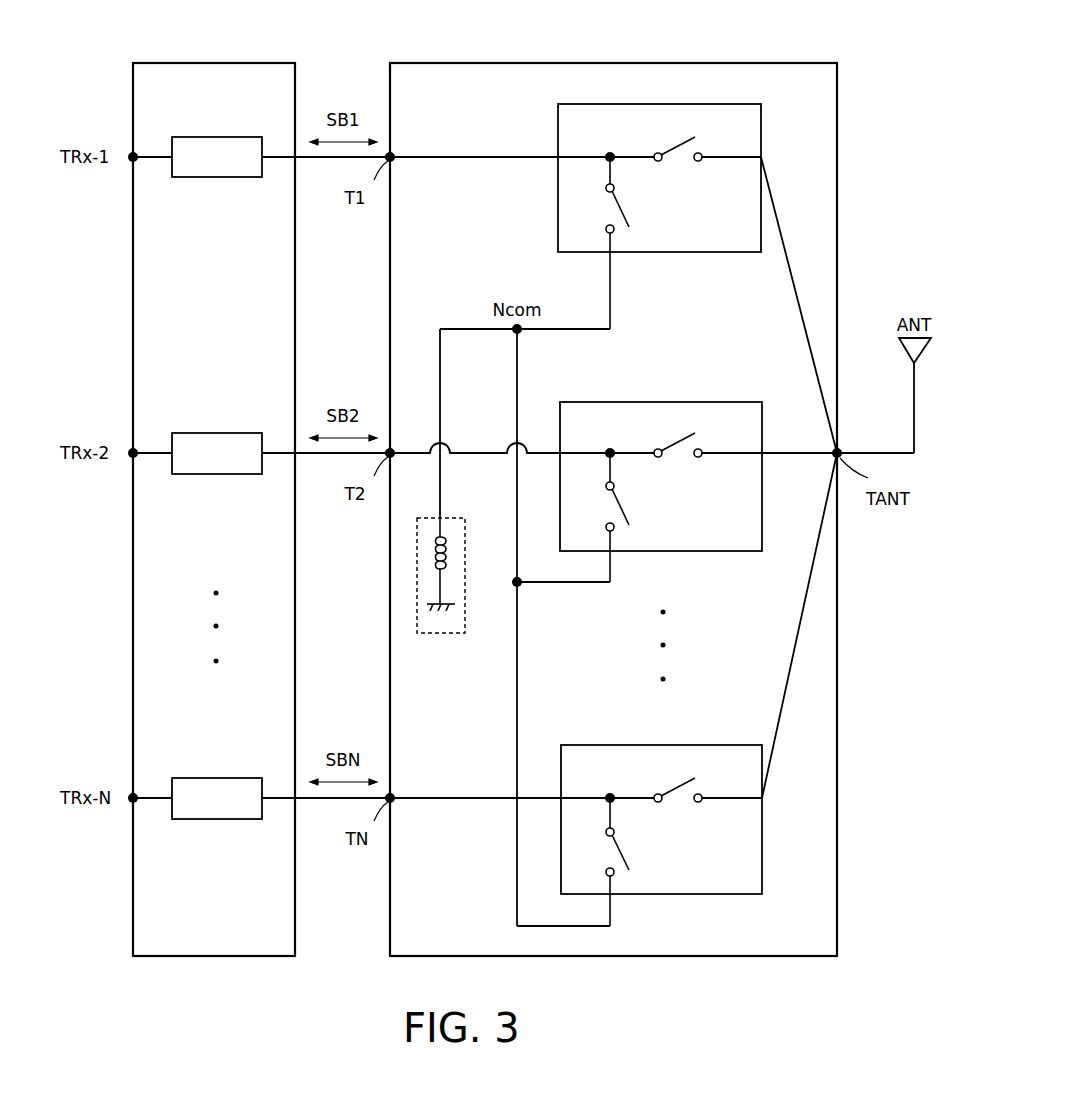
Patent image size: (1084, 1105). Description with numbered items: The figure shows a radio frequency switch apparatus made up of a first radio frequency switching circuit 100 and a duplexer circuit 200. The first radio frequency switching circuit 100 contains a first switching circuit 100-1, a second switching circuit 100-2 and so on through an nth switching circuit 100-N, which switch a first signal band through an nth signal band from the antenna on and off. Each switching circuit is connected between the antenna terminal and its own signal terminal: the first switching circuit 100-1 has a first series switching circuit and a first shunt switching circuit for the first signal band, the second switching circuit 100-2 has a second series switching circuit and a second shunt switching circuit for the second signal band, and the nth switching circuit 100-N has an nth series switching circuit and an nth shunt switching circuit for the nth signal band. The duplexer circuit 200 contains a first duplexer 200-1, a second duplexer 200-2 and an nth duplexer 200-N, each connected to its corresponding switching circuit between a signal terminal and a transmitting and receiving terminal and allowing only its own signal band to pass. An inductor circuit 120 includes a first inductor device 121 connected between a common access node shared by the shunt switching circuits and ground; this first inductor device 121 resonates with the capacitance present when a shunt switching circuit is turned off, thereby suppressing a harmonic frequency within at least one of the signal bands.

The first radio frequency switching circuit 100 is at (785, 63).
The duplexer circuit 200 is at (232, 63).
The first duplexer 200-1 is at (190, 137).
The second duplexer 200-2 is at (190, 433).
The nth duplexer 200-N is at (190, 778).
The first switching circuit 100-1 is at (693, 104).
The second switching circuit 100-2 is at (693, 402).
The nth switching circuit 100-N is at (693, 745).
The inductor circuit 120 is at (465, 597).
The first inductor device 121 is at (447, 552).